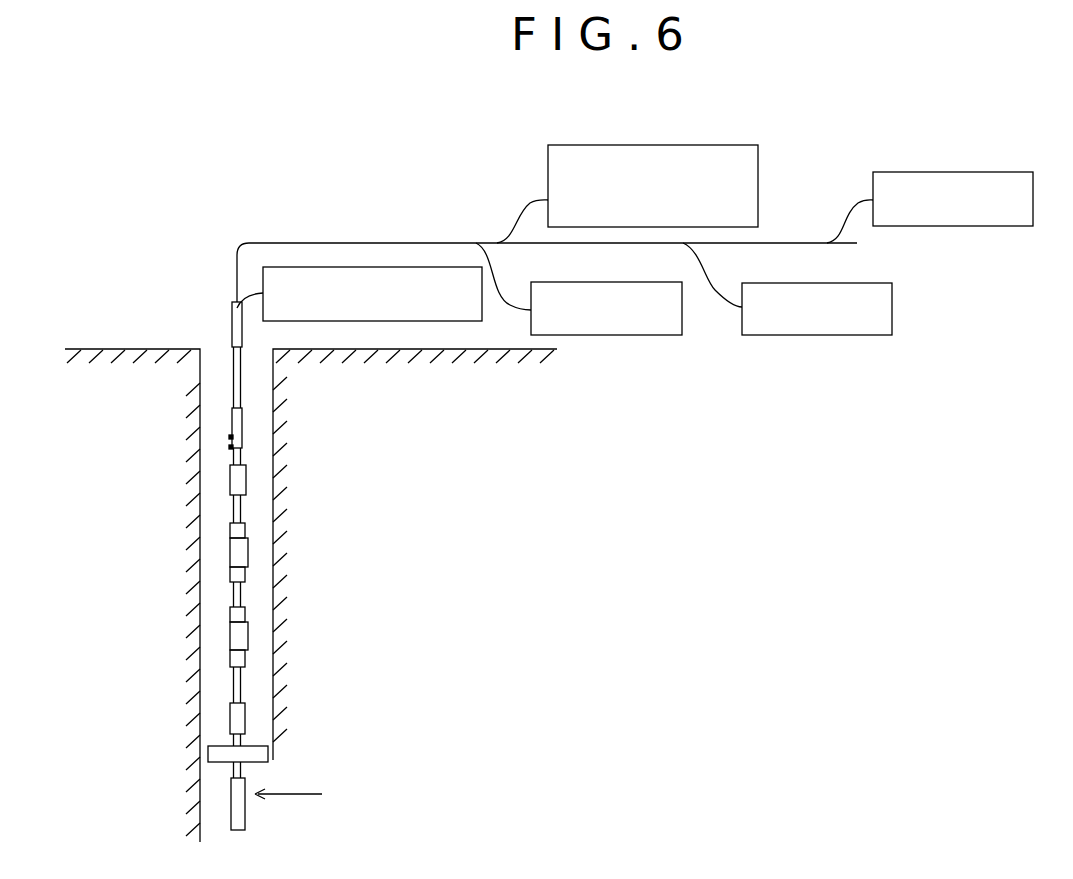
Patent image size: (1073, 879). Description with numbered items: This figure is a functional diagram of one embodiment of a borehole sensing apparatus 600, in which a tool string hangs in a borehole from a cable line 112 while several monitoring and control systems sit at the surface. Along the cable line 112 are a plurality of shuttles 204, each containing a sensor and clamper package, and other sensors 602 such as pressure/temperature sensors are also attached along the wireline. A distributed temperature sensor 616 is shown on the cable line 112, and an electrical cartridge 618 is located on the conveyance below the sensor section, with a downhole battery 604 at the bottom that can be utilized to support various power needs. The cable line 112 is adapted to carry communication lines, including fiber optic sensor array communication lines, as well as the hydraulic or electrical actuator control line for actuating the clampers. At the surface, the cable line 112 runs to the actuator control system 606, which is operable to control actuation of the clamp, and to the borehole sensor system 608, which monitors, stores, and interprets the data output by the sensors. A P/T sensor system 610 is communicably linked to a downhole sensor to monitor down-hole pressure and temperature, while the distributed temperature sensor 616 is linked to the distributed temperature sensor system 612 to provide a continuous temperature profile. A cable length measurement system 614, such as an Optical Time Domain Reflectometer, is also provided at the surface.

The borehole sensing apparatus 600 is at (467, 160).
The cable length measurement system 614 is at (652, 145).
The distributed temperature sensor (DTS) system 612 is at (962, 172).
The actuator control system 606 is at (366, 264).
The borehole sensor system 608 is at (602, 337).
The P/T sensor system 610 is at (892, 307).
The cable line 112 is at (229, 437).
The distributed temperature sensor 616 is at (229, 447).
The sensors 602 is at (230, 482).
The shuttles 204 is at (230, 637).
The electrical cartridge 618 is at (208, 757).
The downhole battery 604 is at (231, 812).